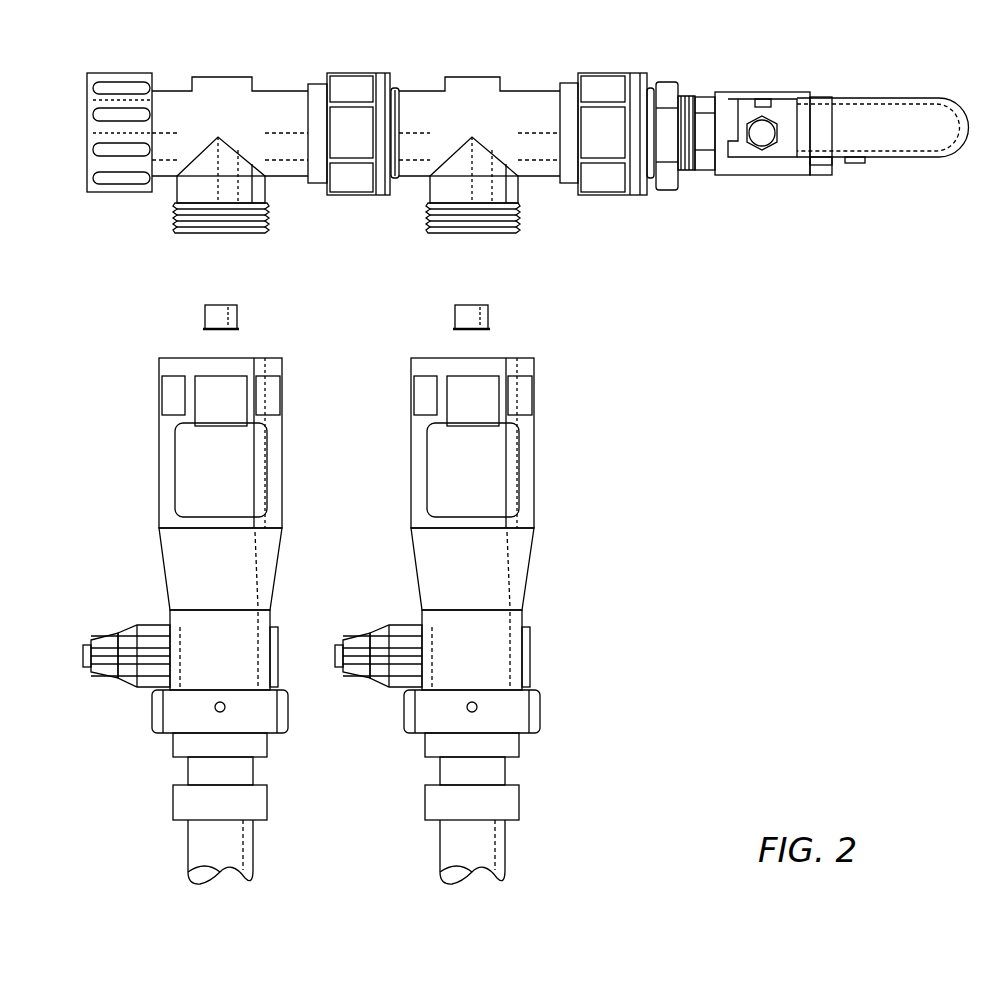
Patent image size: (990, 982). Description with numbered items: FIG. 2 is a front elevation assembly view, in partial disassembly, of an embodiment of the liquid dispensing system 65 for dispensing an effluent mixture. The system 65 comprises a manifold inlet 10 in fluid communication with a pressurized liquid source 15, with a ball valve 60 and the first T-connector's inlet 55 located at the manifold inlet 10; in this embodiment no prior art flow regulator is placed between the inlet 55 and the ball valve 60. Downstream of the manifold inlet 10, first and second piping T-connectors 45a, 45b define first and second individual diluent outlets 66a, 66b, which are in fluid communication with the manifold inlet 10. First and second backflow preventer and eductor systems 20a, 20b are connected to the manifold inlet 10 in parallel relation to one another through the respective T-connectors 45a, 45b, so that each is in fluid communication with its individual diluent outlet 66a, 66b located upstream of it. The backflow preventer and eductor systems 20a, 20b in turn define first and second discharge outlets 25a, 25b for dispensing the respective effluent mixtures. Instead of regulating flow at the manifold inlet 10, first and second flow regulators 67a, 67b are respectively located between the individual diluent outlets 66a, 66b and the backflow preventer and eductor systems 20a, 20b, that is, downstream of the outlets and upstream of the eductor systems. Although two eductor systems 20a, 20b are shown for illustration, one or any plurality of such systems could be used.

The manifold inlet 10 is at (638, 222).
The pressurized liquid source 15 is at (815, 210).
The first backflow preventer and eductor system 20a is at (148, 588).
The second backflow preventer and eductor system 20b is at (398, 542).
The first discharge outlet 25a is at (205, 882).
The second discharge outlet 25b is at (455, 880).
The first T-connector 45a is at (173, 160).
The second T-connector 45b is at (424, 160).
The first T-connector's inlet 55 is at (650, 75).
The ball valve 60 is at (723, 110).
The liquid dispensing system 65 is at (100, 771).
The first individual diluent outlet 66a is at (190, 235).
The second individual diluent outlet 66b is at (440, 235).
The first flow regulator 67a is at (228, 315).
The second flow regulator 67b is at (480, 315).